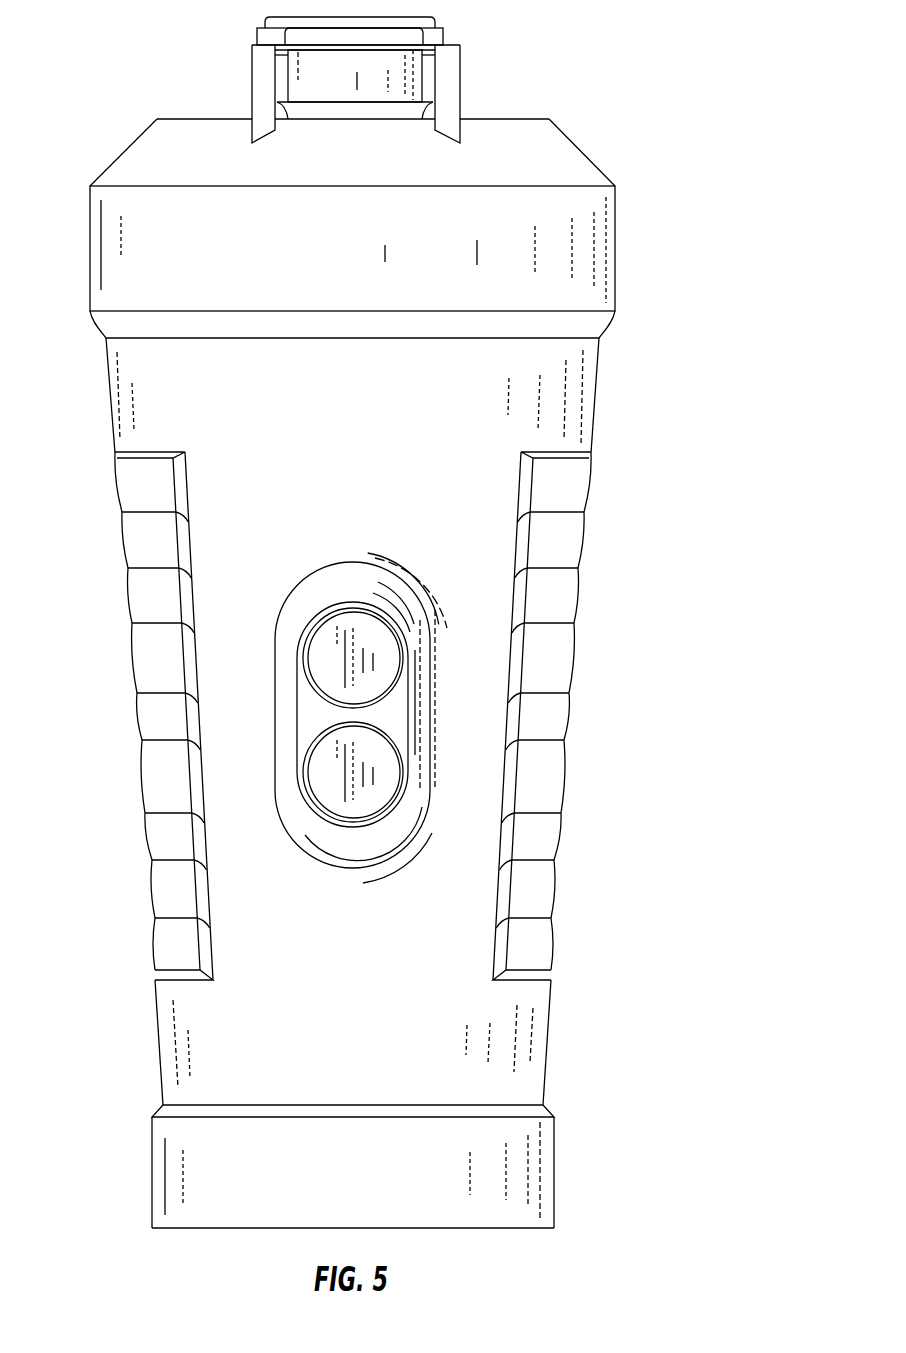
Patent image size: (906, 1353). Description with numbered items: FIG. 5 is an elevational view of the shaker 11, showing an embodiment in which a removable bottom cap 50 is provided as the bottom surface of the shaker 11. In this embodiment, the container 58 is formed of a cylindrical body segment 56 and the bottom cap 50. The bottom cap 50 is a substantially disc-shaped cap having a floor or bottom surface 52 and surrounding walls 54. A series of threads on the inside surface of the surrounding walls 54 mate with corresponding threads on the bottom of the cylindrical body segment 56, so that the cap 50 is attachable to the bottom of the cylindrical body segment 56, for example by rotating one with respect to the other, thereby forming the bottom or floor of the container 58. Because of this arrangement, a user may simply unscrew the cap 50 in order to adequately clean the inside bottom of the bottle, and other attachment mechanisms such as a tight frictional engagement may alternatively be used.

The shaker 11 is at (528, 58).
The removable bottom cap 50 is at (325, 1189).
The bottom surface 52 is at (512, 1228).
The surrounding walls 54 is at (528, 1160).
The cylindrical body segment 56 is at (527, 1012).
The container 58 is at (572, 783).